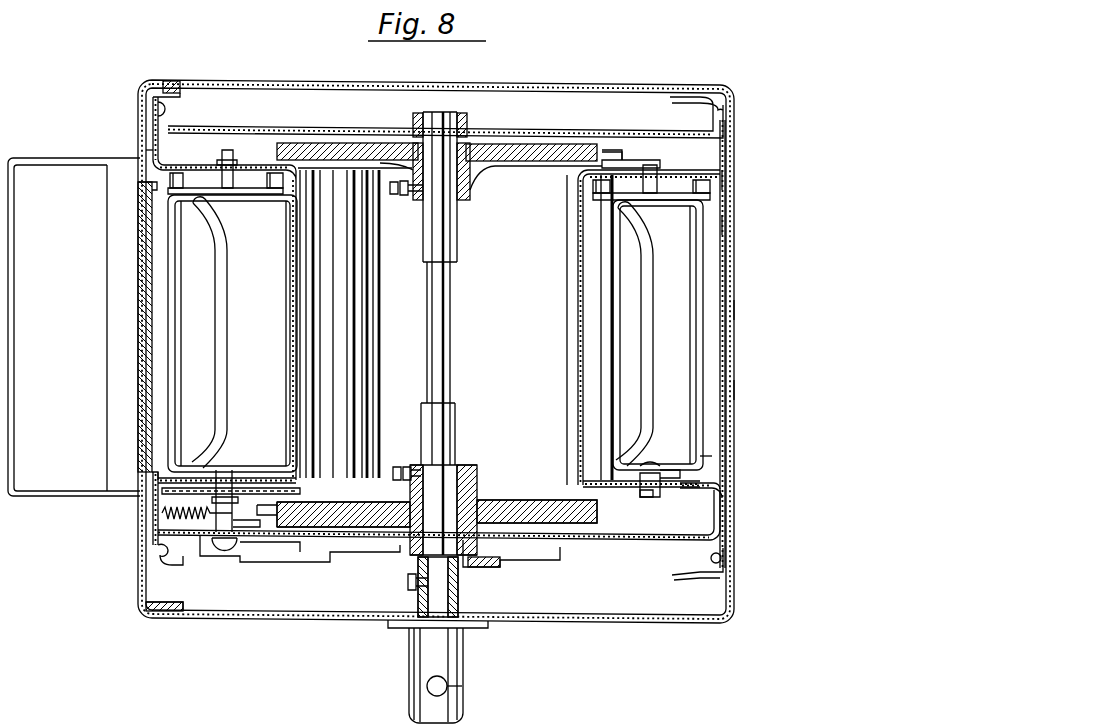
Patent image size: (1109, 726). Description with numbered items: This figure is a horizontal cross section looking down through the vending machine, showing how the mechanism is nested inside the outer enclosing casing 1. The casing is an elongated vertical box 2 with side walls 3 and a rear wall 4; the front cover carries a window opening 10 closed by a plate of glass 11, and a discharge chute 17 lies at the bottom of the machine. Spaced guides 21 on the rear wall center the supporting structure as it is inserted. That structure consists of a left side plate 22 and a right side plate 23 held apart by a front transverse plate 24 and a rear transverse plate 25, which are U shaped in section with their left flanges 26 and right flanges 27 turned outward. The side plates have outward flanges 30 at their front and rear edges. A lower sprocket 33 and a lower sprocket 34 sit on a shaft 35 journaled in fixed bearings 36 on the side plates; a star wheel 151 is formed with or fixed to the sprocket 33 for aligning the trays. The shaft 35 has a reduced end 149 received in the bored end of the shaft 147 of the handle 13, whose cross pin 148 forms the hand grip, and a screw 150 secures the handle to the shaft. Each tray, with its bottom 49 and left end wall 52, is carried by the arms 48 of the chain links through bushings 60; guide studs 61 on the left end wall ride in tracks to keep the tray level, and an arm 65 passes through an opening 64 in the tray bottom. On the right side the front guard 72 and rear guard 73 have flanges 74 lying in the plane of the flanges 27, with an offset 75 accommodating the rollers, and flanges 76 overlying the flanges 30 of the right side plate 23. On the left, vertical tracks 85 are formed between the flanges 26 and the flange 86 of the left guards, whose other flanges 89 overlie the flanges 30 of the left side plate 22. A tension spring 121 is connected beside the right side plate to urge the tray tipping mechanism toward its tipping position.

The outer enclosing casing 1 is at (738, 310).
The elongated vertical box 2 is at (667, 624).
The side walls 3 is at (548, 83).
The rear wall 4 is at (738, 392).
The window opening 10 is at (140, 346).
The plate of glass 11 is at (138, 404).
The handle 13 is at (408, 662).
The discharge chute 17 is at (20, 305).
The guides 21 is at (702, 97).
The left side plate 22 is at (290, 127).
The right side plate 23 is at (652, 542).
The front transverse plate 24 is at (300, 370).
The rear transverse plate 25 is at (578, 278).
The left flanges 26 is at (244, 172).
The right flanges 27 is at (305, 464).
The outward flanges 30 is at (172, 82).
The lower sprocket 33 is at (510, 478).
The lower sprocket 34 is at (372, 143).
The shaft 35 is at (442, 450).
The fixed bearings 36 is at (400, 554).
The arms 48 is at (650, 168).
The bottom 49 is at (200, 283).
The left end wall 52 is at (253, 198).
The bushings 60 is at (682, 472).
The guide studs 61 is at (728, 225).
The opening 64 is at (706, 460).
The arm 65 is at (649, 457).
The front guard 72 is at (154, 132).
The rear guard 73 is at (738, 144).
The flanges 74 is at (142, 480).
The offset 75 is at (672, 505).
The flanges 76 is at (158, 548).
The vertical tracks 85 is at (220, 160).
The flange 86 is at (197, 173).
The flanges 89 is at (153, 150).
The tension spring 121 is at (212, 546).
The shaft 147 is at (464, 691).
The cross pin 148 is at (428, 689).
The reduced end 149 is at (460, 594).
The screw 150 is at (410, 582).
The star wheel 151 is at (330, 484).